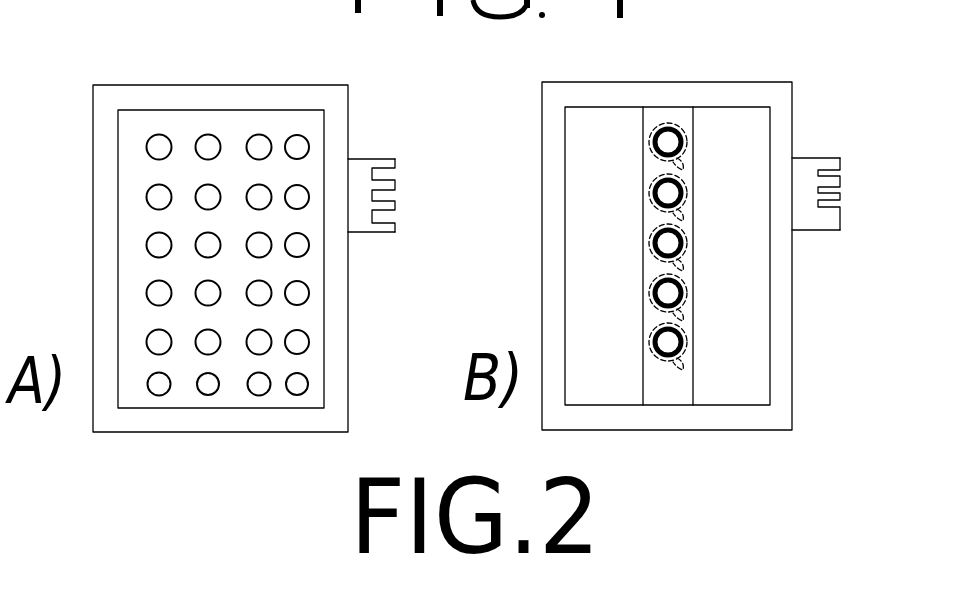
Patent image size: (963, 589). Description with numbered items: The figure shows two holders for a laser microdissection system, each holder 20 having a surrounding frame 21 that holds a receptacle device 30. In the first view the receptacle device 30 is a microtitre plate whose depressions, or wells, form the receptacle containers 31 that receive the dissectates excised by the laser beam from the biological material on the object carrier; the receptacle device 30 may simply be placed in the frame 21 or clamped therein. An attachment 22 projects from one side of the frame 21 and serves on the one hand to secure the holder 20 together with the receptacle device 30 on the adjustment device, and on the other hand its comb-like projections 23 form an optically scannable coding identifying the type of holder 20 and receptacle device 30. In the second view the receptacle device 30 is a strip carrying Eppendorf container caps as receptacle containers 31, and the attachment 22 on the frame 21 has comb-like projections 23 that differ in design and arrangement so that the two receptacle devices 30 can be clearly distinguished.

In FIG. 2A, the holder 20 is at (244, 217).
In FIG. 2B, the holder 20 is at (718, 239).
In FIG. 2A, the frame 21 is at (335, 138).
In FIG. 2B, the frame 21 is at (785, 100).
In FIG. 2A, the attachment 22 is at (372, 233).
In FIG. 2B, the attachment 22 is at (818, 232).
In FIG. 2A, the comb-like projections 23 is at (398, 176).
In FIG. 2B, the comb-like projections 23 is at (842, 174).
In FIG. 2A, the receptacle device 30 is at (132, 143).
In FIG. 2B, the receptacle device 30 is at (677, 115).
In FIG. 2A, the receptacle containers 31 is at (137, 200).
In FIG. 2B, the receptacle containers 31 is at (658, 358).